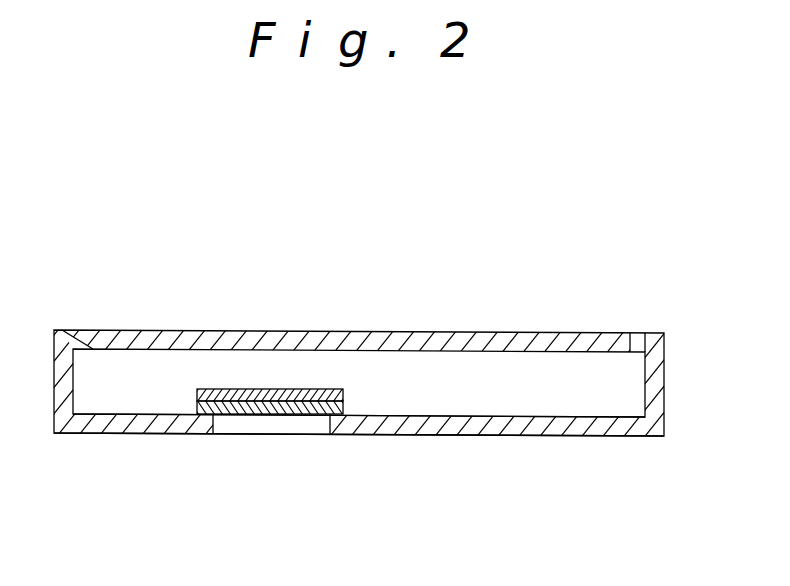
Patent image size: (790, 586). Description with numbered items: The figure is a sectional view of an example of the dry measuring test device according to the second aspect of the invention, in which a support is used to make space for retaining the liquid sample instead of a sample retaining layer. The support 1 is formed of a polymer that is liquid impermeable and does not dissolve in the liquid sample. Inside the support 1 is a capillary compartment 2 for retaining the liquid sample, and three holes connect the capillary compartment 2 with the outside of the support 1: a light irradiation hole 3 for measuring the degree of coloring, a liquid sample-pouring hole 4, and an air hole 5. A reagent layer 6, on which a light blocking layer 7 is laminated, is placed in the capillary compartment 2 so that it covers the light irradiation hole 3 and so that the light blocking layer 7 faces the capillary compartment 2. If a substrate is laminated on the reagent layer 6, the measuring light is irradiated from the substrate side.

The support 1 is at (468, 342).
The capillary compartment 2 is at (531, 396).
The light irradiation hole 3 is at (230, 424).
The liquid sample-pouring hole 4 is at (128, 342).
The air hole 5 is at (635, 345).
The reagent layer 6 is at (282, 405).
The light blocking layer 7 is at (308, 389).